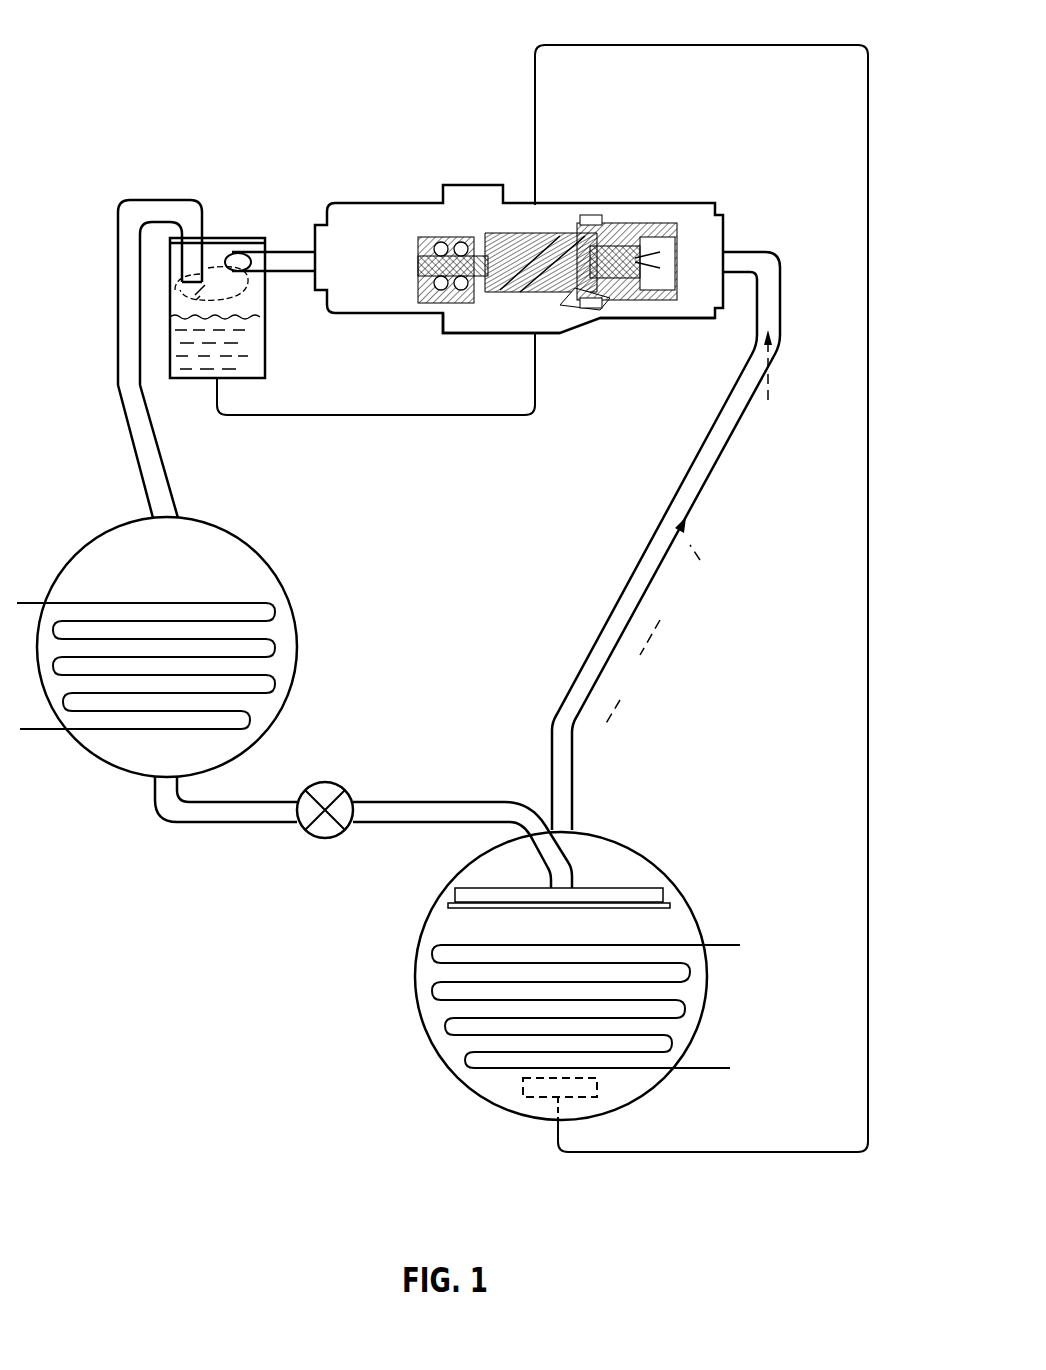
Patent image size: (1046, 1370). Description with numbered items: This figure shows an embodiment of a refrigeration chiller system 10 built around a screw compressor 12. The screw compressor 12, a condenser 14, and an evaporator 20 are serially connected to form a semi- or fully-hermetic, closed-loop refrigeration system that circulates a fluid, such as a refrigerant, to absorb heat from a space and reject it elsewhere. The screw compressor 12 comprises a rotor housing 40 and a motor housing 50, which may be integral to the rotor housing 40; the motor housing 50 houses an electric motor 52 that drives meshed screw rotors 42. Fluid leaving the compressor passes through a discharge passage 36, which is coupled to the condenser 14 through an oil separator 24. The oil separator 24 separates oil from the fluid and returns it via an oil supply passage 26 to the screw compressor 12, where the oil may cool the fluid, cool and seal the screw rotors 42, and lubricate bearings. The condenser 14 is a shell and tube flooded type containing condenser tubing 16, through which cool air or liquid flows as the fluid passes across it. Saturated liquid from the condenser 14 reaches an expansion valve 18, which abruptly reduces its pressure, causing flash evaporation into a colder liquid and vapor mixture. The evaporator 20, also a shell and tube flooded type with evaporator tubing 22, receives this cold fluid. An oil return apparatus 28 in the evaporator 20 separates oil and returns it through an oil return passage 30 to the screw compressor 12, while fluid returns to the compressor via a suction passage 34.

The chiller system 10 is at (118, 93).
The screw compressor 12 is at (519, 258).
The condenser 14 is at (189, 644).
The condenser tubing 16 is at (277, 647).
The expansion valve 18 is at (337, 787).
The evaporator 20 is at (561, 983).
The evaporator tubing 22 is at (685, 1003).
The oil separator 24 is at (231, 238).
The oil supply passage 26 is at (373, 420).
The oil return apparatus 28 is at (523, 1085).
The oil return passage 30 is at (868, 538).
The suction passage 34 is at (780, 336).
The discharge passage 36 is at (296, 273).
The rotor housing 40 is at (493, 334).
The screw rotors 42 is at (520, 266).
The motor housing 50 is at (672, 319).
The electric motor 52 is at (632, 225).